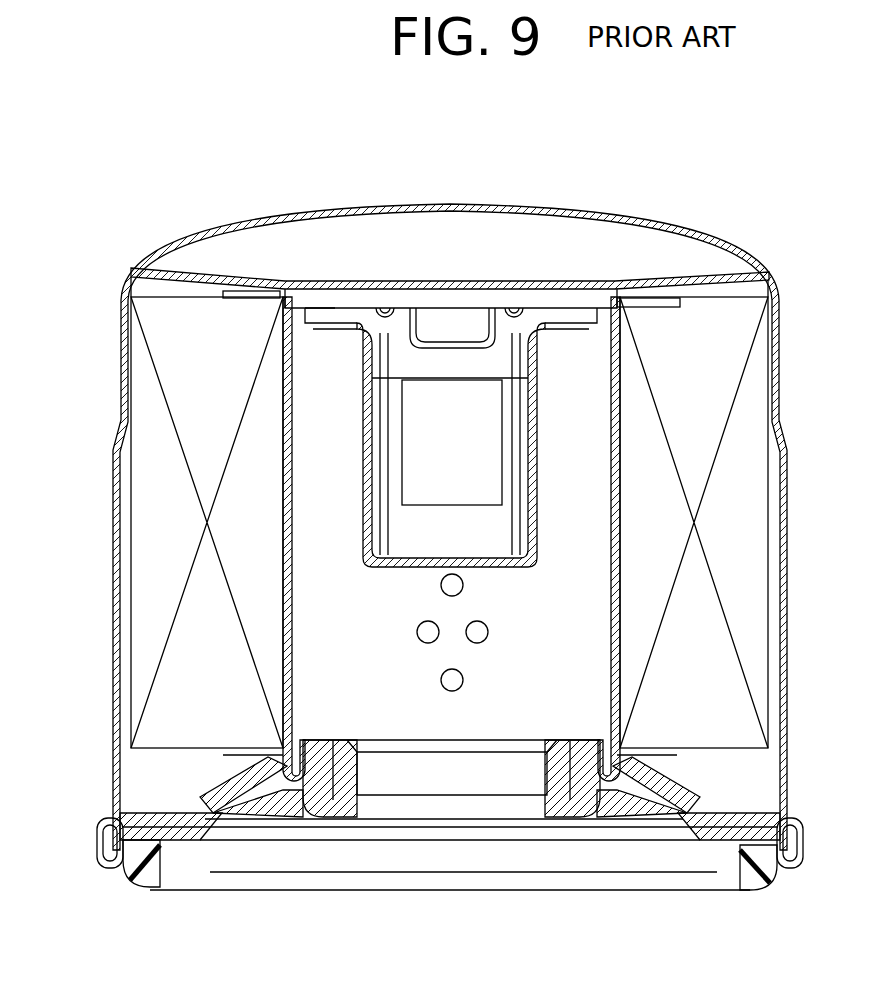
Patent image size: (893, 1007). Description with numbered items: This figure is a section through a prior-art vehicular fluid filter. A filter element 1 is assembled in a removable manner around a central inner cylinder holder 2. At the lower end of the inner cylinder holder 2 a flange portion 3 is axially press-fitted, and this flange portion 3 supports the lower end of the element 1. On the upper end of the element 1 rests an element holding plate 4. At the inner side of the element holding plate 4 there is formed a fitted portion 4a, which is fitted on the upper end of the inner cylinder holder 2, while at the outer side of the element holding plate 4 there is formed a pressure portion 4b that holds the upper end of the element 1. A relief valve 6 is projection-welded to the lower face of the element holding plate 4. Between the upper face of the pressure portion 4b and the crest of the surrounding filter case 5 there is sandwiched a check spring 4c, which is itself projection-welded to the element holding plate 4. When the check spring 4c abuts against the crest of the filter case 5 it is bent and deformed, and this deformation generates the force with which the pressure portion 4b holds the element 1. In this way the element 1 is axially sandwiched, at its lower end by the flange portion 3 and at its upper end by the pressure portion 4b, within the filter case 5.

The element 1 is at (155, 492).
The inner cylinder holder 2 is at (283, 610).
The flange portion 3 is at (265, 775).
The element holding plate 4 is at (547, 309).
The fitted portion 4a is at (335, 305).
The pressure portion 4b is at (262, 292).
The check spring 4c is at (698, 278).
The filter case 5 is at (535, 213).
The relief valve 6 is at (452, 345).